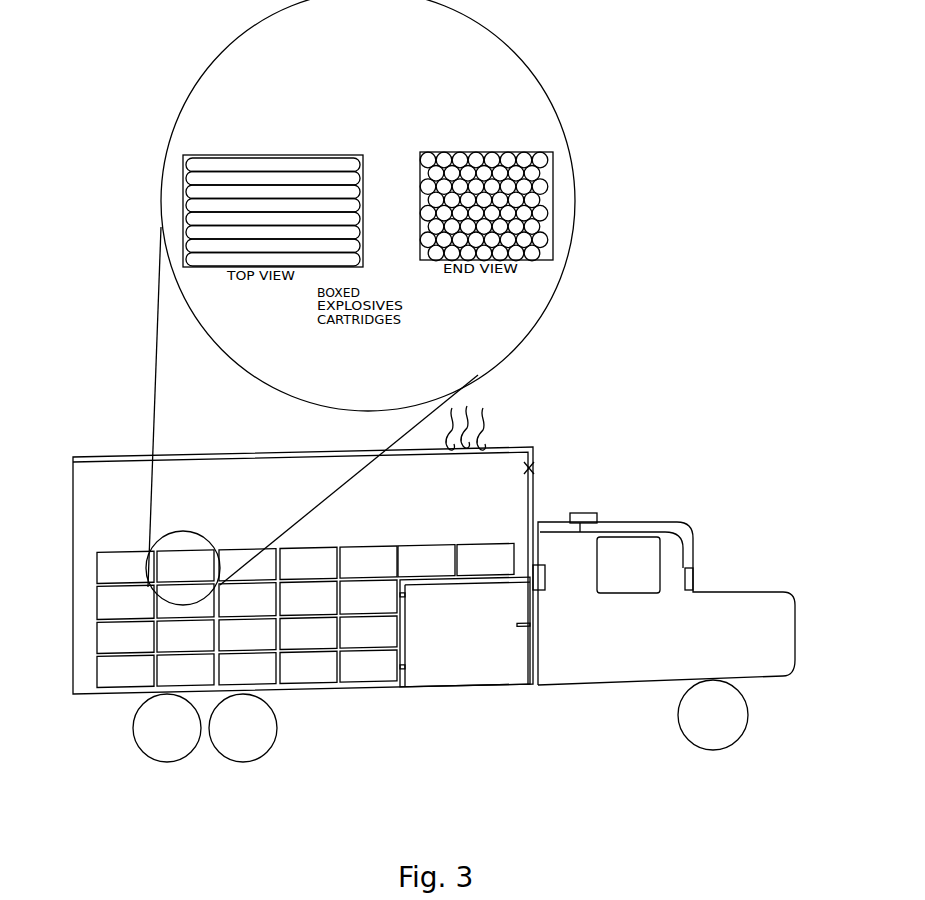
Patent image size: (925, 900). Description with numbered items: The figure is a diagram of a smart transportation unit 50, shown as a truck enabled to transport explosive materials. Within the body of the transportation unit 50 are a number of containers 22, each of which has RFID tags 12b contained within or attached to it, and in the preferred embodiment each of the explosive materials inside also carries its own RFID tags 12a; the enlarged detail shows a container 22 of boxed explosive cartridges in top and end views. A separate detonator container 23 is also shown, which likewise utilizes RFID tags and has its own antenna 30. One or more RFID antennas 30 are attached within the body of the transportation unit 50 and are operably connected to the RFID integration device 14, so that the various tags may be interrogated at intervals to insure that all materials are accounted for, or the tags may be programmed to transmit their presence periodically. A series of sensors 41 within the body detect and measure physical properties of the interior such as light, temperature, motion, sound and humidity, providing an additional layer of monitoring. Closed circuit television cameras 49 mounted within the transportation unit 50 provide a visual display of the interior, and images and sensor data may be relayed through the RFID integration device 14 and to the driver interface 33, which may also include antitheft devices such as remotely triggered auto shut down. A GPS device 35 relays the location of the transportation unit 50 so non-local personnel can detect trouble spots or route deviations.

The RFID tags 12a is at (338, 157).
The RFID tags 12b is at (527, 150).
The containers 22 is at (186, 157).
The RFID antennas 30 is at (266, 456).
The detonator container 23 is at (440, 689).
The sensors 41 is at (466, 422).
The closed circuit television cameras 49 is at (531, 468).
The transportation unit 50 is at (655, 498).
The GPS device 35 is at (591, 513).
The driver interface 33 is at (695, 578).
The RFID integration device 14 is at (546, 590).